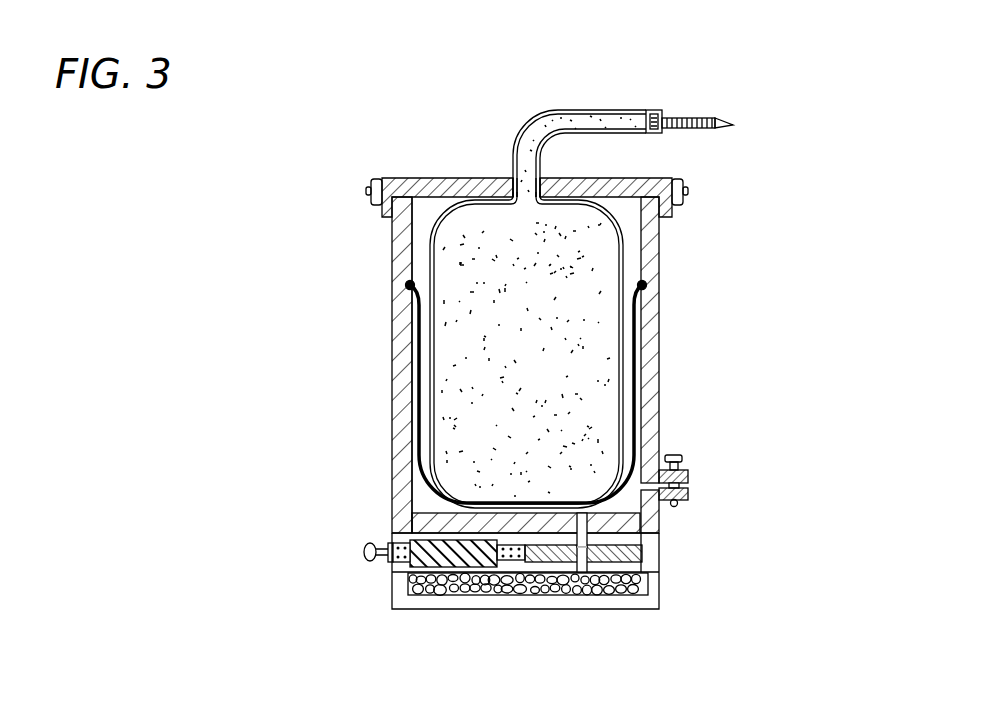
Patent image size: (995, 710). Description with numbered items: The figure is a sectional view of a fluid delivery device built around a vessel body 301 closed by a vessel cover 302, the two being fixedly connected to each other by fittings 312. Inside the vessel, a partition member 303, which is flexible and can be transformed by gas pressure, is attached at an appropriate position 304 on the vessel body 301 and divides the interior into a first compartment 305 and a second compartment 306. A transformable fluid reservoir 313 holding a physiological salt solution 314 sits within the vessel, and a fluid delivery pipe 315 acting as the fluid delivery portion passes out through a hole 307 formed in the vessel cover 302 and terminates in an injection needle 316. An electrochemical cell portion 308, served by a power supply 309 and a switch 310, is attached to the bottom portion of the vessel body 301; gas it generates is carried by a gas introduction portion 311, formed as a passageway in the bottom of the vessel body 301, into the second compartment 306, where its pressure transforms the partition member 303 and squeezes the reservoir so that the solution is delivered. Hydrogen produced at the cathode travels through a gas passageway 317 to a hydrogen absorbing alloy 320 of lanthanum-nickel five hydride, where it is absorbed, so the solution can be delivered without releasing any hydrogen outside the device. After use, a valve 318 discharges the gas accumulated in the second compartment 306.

The vessel body 301 is at (393, 467).
The vessel cover 302 is at (442, 178).
The partition member 303 is at (418, 388).
The position 304 is at (408, 285).
The first compartment 305 is at (415, 243).
The second compartment 306 is at (418, 500).
The hole 307 is at (513, 178).
The electrochemical cell portion 308 is at (615, 555).
The power supply 309 is at (452, 560).
The switch 310 is at (364, 555).
The gas introduction portion 311 is at (587, 527).
The fittings 312 is at (371, 188).
The transformable fluid reservoir 313 is at (633, 354).
The physiological salt solution 314 is at (607, 256).
The fluid delivery pipe 315 is at (585, 122).
The injection needle 316 is at (692, 117).
The gas passageway 317 is at (582, 566).
The valve 318 is at (683, 457).
The hydrogen absorbing alloy 320 is at (521, 585).